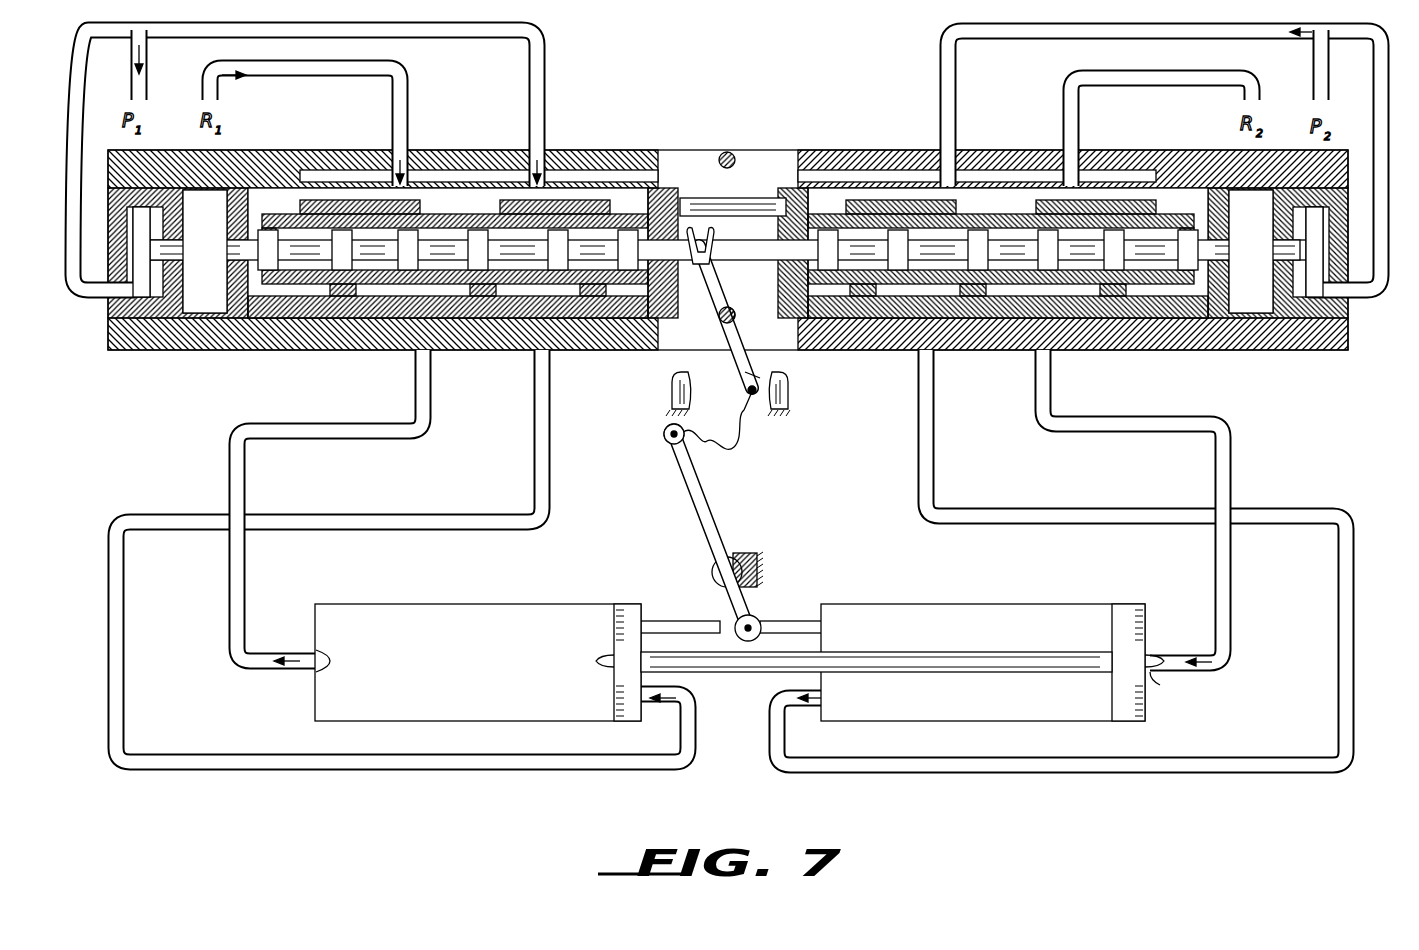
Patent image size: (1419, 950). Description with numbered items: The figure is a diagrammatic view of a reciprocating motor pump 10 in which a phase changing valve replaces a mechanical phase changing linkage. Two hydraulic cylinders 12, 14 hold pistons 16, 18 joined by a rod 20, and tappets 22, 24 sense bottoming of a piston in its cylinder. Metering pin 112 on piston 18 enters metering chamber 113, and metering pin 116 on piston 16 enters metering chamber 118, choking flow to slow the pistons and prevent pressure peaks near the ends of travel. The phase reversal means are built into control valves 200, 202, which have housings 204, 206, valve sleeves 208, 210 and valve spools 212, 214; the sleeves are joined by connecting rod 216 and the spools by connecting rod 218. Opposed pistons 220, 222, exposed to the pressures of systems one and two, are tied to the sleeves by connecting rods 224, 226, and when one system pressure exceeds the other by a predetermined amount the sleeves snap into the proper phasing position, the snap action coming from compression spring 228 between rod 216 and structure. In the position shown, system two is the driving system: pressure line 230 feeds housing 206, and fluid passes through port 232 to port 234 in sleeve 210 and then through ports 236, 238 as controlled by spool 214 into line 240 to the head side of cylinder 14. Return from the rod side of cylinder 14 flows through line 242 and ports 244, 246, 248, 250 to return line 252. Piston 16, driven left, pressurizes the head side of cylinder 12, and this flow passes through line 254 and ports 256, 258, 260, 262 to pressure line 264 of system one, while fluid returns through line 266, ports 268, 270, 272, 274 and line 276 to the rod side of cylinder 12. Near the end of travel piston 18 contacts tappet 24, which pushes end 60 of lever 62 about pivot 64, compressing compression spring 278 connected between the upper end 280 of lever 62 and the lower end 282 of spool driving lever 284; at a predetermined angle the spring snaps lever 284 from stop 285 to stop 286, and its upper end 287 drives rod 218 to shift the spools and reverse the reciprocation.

The reciprocating motor pump 10 is at (1300, 420).
The hydraulic cylinder 12 is at (433, 605).
The hydraulic cylinder 14 is at (1003, 605).
The piston 16 is at (612, 610).
The piston 18 is at (1118, 600).
The rod 20 is at (706, 680).
The tappet 22 is at (696, 621).
The tappet 24 is at (812, 620).
The lower end of lever 60 is at (761, 626).
The lever 62 is at (735, 526).
The pivot 64 is at (730, 562).
The metering pin 112 is at (1155, 690).
The metering chamber 113 is at (1166, 672).
The metering pin 116 is at (600, 672).
The metering chamber 118 is at (300, 676).
The control valve 200 is at (620, 138).
The control valve 202 is at (1163, 148).
The housing 204 is at (666, 214).
The housing 206 is at (1032, 152).
The valve sleeve 208 is at (700, 190).
The valve sleeve 210 is at (808, 186).
The valve spool 212 is at (596, 350).
The valve spool 214 is at (1160, 350).
The connecting rod 216 is at (775, 199).
The connecting rod 218 is at (772, 276).
The piston 220 is at (110, 312).
The piston 222 is at (1272, 298).
The connecting rod 224 is at (216, 231).
The connecting rod 226 is at (1272, 240).
The compression spring 228 is at (772, 152).
The pressure line 230 is at (1176, 31).
The port 232 is at (1150, 228).
The port 234 is at (1160, 212).
The port 236 is at (1110, 212).
The port 238 is at (1115, 350).
The line 240 is at (1215, 426).
The line 242 is at (1356, 612).
The port 244 is at (1186, 350).
The port 246 is at (1251, 207).
The port 248 is at (1062, 205).
The port 250 is at (1064, 196).
The return line 252 is at (1160, 78).
The line 254 is at (230, 466).
The port 256 is at (566, 350).
The port 258 is at (572, 228).
The port 260 is at (520, 214).
The port 262 is at (528, 214).
The pressure line 264 is at (392, 30).
The line 266 is at (312, 71).
The port 268 is at (625, 214).
The port 270 is at (700, 186).
The port 272 is at (716, 312).
The port 274 is at (640, 350).
The line 276 is at (553, 483).
The compression spring 278 is at (735, 446).
The upper end of lever 280 is at (665, 432).
The lower end of spool driving lever 282 is at (744, 390).
The spool driving lever 284 is at (740, 352).
The stop 285 is at (792, 389).
The stop 286 is at (670, 396).
The upper end of spool driving lever 287 is at (716, 240).